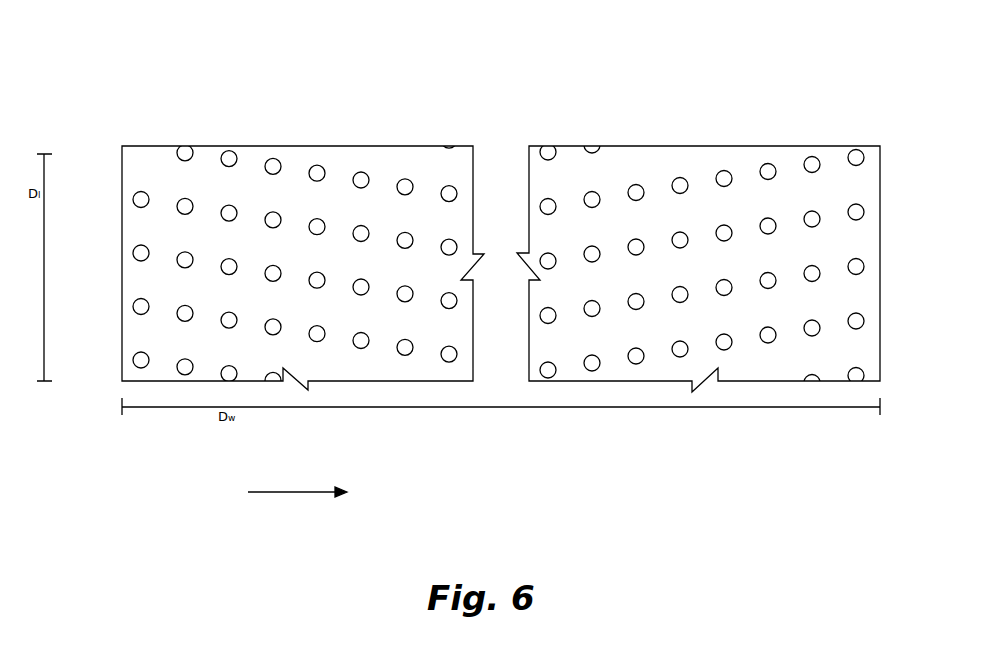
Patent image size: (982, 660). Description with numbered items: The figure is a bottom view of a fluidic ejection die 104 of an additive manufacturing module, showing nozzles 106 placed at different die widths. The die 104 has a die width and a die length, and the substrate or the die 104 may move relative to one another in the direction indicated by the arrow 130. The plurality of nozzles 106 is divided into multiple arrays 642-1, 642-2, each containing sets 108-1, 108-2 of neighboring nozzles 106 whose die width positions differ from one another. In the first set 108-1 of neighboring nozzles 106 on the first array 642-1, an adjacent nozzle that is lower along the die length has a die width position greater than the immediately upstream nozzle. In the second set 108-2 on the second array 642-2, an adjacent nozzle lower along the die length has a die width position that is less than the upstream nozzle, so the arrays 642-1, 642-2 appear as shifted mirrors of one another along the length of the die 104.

The fluidic ejection die 104 is at (314, 78).
The nozzle 106 is at (229, 162).
The first set of neighboring nozzles 108-1 is at (237, 223).
The second set of neighboring nozzles 108-2 is at (768, 226).
The arrow 130 is at (290, 493).
The first array 642-1 is at (382, 155).
The second array 642-2 is at (604, 155).